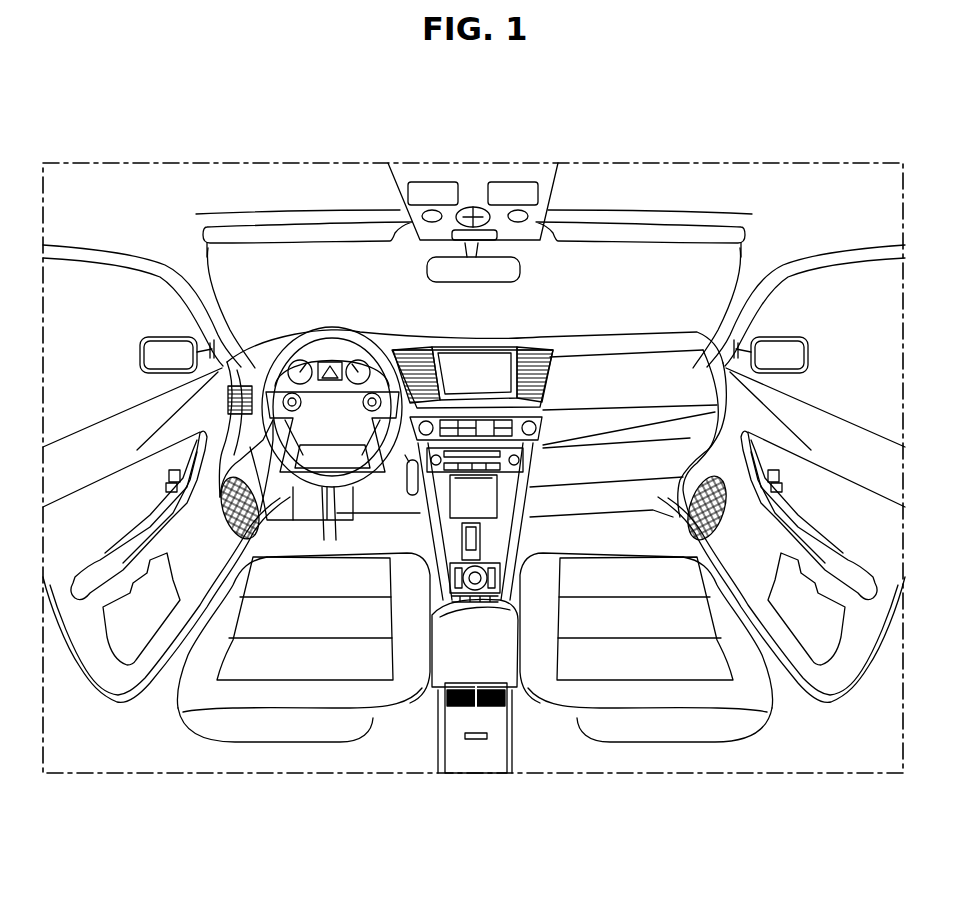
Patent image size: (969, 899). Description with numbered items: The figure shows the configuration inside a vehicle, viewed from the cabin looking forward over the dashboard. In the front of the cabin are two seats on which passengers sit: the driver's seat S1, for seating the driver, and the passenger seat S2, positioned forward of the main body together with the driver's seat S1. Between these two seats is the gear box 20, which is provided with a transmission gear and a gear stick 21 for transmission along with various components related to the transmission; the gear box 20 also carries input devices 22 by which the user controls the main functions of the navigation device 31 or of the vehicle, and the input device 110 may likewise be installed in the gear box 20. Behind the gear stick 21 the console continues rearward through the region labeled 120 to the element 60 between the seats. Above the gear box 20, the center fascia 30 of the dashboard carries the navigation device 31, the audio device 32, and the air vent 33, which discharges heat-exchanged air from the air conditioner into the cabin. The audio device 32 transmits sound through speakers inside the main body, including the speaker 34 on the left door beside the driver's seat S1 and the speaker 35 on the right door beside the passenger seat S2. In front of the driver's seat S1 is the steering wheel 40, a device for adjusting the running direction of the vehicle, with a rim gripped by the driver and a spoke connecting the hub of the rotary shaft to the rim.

The gear box 20 is at (489, 522).
The gear stick 21 is at (462, 545).
The input devices 22 is at (492, 558).
The center fascia 30 is at (553, 418).
The navigation device 31 is at (485, 352).
The audio device 32 is at (530, 456).
The air vent 33 is at (540, 360).
The speaker 34 is at (270, 515).
The speaker 35 is at (668, 555).
The steering wheel 40 is at (347, 324).
The cup holder 60 is at (455, 705).
The input device 110 is at (392, 622).
The armrest 120 is at (505, 635).
The driver's seat S1 is at (277, 653).
The passenger seat S2 is at (758, 718).